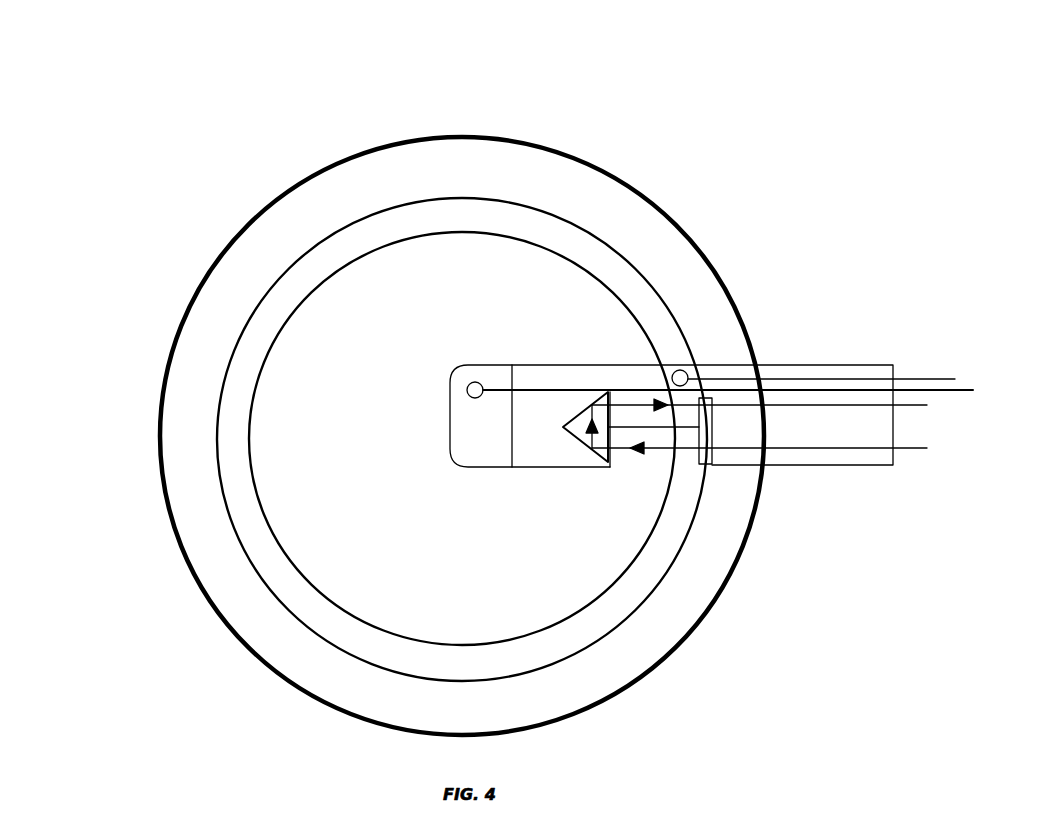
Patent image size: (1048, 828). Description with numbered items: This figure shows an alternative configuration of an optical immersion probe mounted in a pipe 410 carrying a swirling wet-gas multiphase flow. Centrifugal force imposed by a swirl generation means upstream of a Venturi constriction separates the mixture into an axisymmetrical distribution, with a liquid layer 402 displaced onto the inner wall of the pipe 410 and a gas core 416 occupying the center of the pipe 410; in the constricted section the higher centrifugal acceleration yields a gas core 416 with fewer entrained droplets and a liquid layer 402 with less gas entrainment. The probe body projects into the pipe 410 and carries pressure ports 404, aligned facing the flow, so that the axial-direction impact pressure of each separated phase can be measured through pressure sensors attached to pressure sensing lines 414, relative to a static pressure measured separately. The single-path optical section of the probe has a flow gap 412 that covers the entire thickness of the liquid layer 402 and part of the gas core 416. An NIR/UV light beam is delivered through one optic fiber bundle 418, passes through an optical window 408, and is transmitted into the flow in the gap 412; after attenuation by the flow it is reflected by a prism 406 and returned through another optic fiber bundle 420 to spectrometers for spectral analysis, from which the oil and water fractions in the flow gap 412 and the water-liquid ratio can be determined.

The liquid layer 402 is at (237, 478).
The pressure ports 404 is at (475, 382).
The prism 406 is at (577, 420).
The optical window 408 is at (707, 465).
The pipe 410 is at (371, 148).
The flow gap 412 is at (655, 470).
The pressure sensing lines 414 is at (937, 378).
The gas core 416 is at (328, 319).
The optic fiber bundle 418 is at (912, 450).
The optic fiber bundle 420 is at (913, 407).